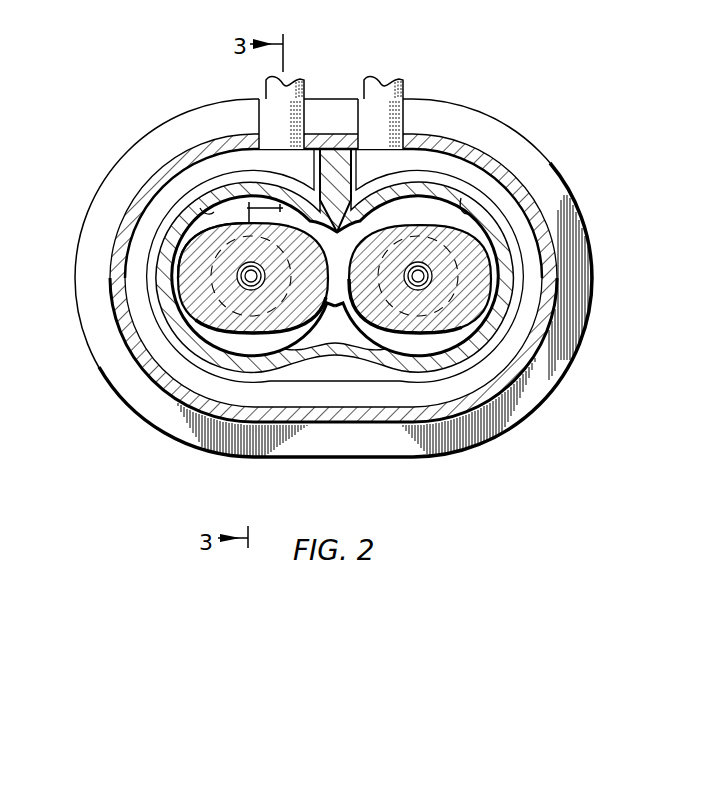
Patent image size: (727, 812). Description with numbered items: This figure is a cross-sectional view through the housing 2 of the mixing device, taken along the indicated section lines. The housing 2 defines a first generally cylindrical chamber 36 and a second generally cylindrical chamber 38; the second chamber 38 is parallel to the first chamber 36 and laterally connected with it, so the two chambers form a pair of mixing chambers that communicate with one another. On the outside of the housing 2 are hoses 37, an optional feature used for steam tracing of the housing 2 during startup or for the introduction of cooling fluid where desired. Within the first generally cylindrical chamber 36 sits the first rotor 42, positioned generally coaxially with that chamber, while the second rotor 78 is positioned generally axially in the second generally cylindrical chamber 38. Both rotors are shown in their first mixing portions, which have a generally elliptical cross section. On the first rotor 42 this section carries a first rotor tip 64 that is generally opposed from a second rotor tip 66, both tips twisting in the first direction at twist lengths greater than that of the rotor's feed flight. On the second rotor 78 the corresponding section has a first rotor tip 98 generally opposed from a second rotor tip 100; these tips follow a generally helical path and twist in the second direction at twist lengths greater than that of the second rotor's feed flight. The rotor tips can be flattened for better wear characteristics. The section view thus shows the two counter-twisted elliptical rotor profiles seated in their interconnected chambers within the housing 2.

The housing 2 is at (440, 72).
The first generally cylindrical chamber 36 is at (422, 222).
The hoses 37 is at (372, 78).
The second generally cylindrical chamber 38 is at (214, 214).
The first rotor 42 is at (476, 250).
The first rotor tip 64 is at (437, 190).
The second rotor tip 66 is at (490, 318).
The second rotor 78 is at (233, 336).
The first rotor tip 98 is at (175, 283).
The second rotor tip 100 is at (300, 303).